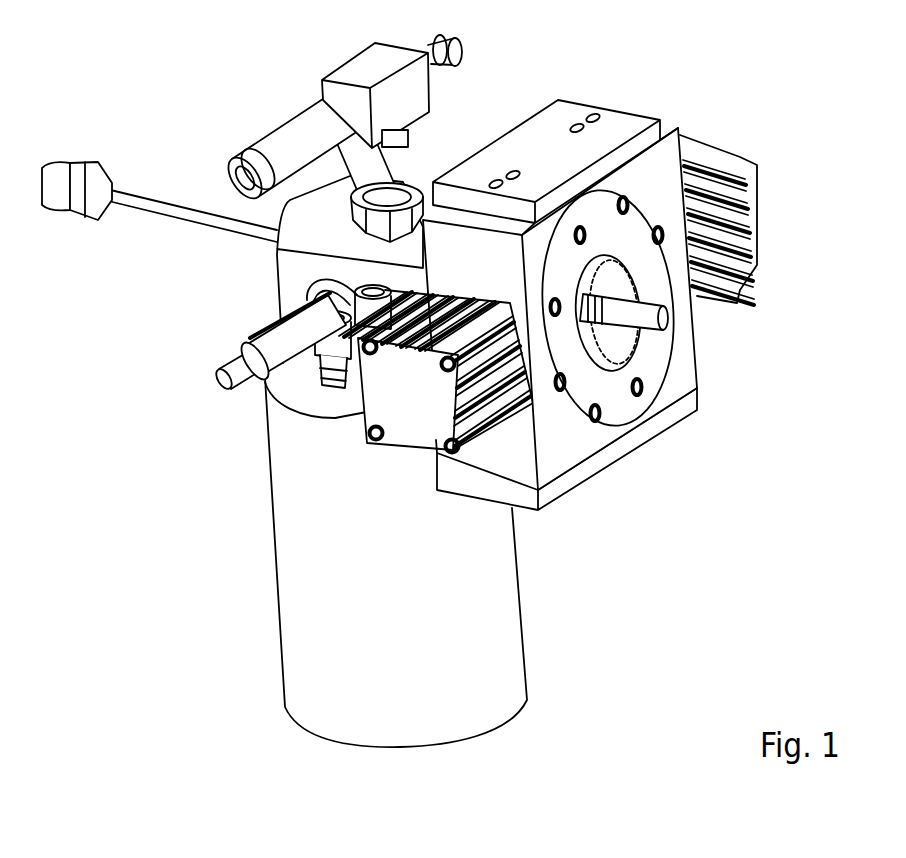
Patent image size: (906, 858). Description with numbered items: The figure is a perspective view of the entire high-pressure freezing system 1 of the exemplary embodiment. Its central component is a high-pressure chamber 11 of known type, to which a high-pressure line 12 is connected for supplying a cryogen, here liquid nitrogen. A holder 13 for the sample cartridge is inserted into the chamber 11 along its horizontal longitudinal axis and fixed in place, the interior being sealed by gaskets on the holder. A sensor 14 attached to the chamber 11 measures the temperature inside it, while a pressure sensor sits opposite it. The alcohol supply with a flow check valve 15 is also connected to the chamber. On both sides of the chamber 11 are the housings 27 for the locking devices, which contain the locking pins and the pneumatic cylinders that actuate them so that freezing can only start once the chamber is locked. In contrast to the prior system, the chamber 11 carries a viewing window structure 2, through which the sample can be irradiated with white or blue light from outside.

The high-pressure freezing system 1 is at (680, 573).
The viewing window structure 2 is at (382, 175).
The high-pressure chamber 11 is at (288, 270).
The high-pressure line 12 is at (137, 193).
The holder 13 is at (640, 322).
The sensor 14 is at (247, 384).
The alcohol supply with flow check valve 15 is at (367, 60).
The housings for the locking devices 27 is at (722, 292).